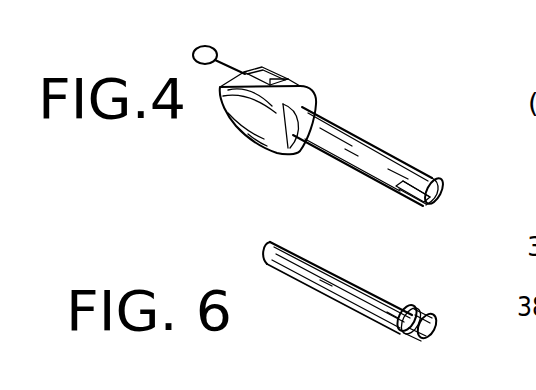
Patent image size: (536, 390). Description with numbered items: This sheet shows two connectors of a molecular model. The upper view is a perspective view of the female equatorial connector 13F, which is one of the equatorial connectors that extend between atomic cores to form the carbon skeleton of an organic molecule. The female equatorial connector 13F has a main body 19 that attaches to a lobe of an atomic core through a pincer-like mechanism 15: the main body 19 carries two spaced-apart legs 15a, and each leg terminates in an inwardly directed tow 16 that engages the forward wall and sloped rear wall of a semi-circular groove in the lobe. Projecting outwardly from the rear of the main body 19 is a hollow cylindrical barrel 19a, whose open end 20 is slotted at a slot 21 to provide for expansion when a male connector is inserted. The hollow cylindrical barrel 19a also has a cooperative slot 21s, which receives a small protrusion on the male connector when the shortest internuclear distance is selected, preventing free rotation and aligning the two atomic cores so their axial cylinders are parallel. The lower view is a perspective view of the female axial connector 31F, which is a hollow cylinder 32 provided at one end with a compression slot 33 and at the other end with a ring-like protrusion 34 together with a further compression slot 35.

In FIG. 4, the pincer-like mechanism 15 is at (297, 82).
In FIG. 4, the legs 15a is at (302, 78).
In FIG. 4, the tow 16 is at (203, 55).
In FIG. 4, the female equatorial connector 13F is at (365, 125).
In FIG. 4, the main body 19 is at (411, 169).
In FIG. 4, the hollow cylindrical barrel 19a is at (352, 165).
In FIG. 4, the open end 20 is at (428, 200).
In FIG. 4, the slot 21 is at (440, 208).
In FIG. 4, the cooperative slot 21s is at (437, 172).
In FIG. 6, the female axial connector 31F is at (398, 285).
In FIG. 6, the hollow cylinder 32 is at (312, 248).
In FIG. 6, the compression slot 33 is at (266, 267).
In FIG. 6, the ring-like protrusion 34 is at (418, 304).
In FIG. 6, the compression slot 35 is at (390, 332).